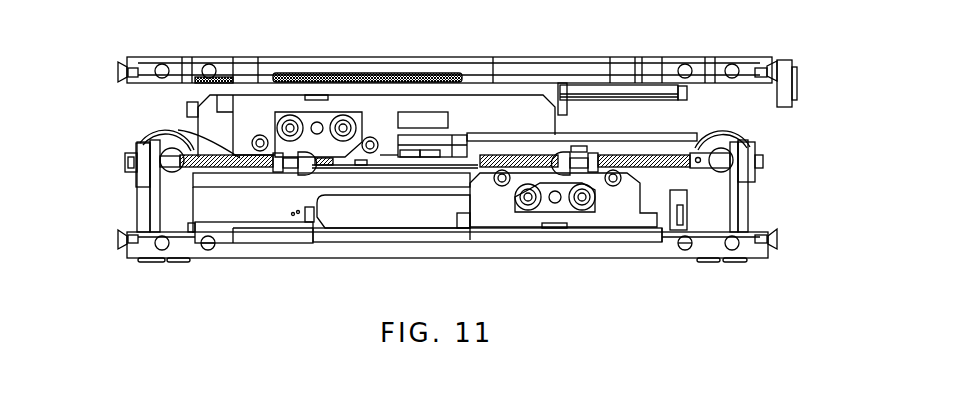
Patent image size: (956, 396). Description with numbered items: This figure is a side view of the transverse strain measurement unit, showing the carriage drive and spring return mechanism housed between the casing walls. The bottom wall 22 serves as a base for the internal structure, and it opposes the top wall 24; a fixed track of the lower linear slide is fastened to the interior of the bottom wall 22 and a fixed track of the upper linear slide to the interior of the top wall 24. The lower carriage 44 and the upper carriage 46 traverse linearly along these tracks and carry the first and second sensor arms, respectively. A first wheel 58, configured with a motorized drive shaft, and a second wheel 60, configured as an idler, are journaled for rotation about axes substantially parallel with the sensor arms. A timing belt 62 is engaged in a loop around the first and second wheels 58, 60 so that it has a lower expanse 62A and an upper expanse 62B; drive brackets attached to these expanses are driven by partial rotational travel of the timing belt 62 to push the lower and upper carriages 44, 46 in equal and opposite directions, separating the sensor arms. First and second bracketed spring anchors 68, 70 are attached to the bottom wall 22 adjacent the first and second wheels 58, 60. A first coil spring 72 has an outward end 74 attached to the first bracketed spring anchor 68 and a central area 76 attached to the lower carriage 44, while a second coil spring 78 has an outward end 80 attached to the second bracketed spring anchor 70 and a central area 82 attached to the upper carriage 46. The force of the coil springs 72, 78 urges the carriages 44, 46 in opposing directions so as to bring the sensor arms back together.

The bottom wall 22 is at (205, 259).
The top wall 24 is at (517, 58).
The lower carriage 44 is at (406, 235).
The upper carriage 46 is at (349, 108).
The first wheel 58 is at (736, 131).
The second wheel 60 is at (141, 133).
The timing belt 62 is at (248, 195).
The lower expanse 62A is at (668, 188).
The upper expanse 62B is at (683, 134).
The first bracketed spring anchor 68 is at (763, 163).
The second bracketed spring anchor 70 is at (136, 172).
The first coil spring 72 is at (618, 156).
The outward end 74 is at (758, 198).
The central area 76 is at (578, 147).
The second coil spring 78 is at (178, 130).
The outward end 80 is at (173, 160).
The central area 82 is at (289, 168).